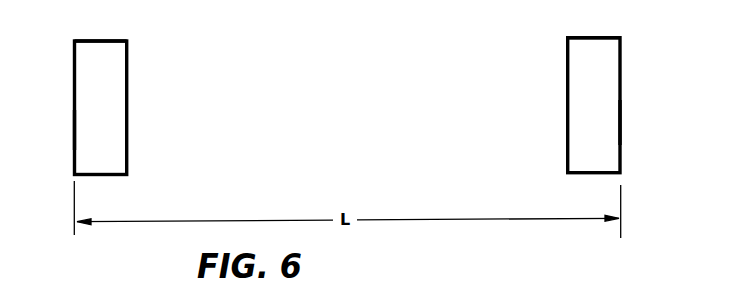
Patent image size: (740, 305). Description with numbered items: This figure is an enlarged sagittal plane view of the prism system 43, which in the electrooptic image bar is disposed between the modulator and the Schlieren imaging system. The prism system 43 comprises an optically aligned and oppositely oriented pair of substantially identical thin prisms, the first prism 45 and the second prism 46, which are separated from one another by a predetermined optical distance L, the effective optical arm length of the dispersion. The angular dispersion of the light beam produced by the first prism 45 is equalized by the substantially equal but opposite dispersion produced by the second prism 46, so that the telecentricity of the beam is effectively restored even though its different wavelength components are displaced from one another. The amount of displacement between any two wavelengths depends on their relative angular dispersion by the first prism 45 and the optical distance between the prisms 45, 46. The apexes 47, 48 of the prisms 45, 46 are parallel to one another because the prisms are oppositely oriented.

The prism system 43 is at (608, 20).
The first prism 45 is at (113, 98).
The second prism 46 is at (582, 97).
The apex of the first prism 47 is at (74, 134).
The apex of the second prism 48 is at (622, 125).